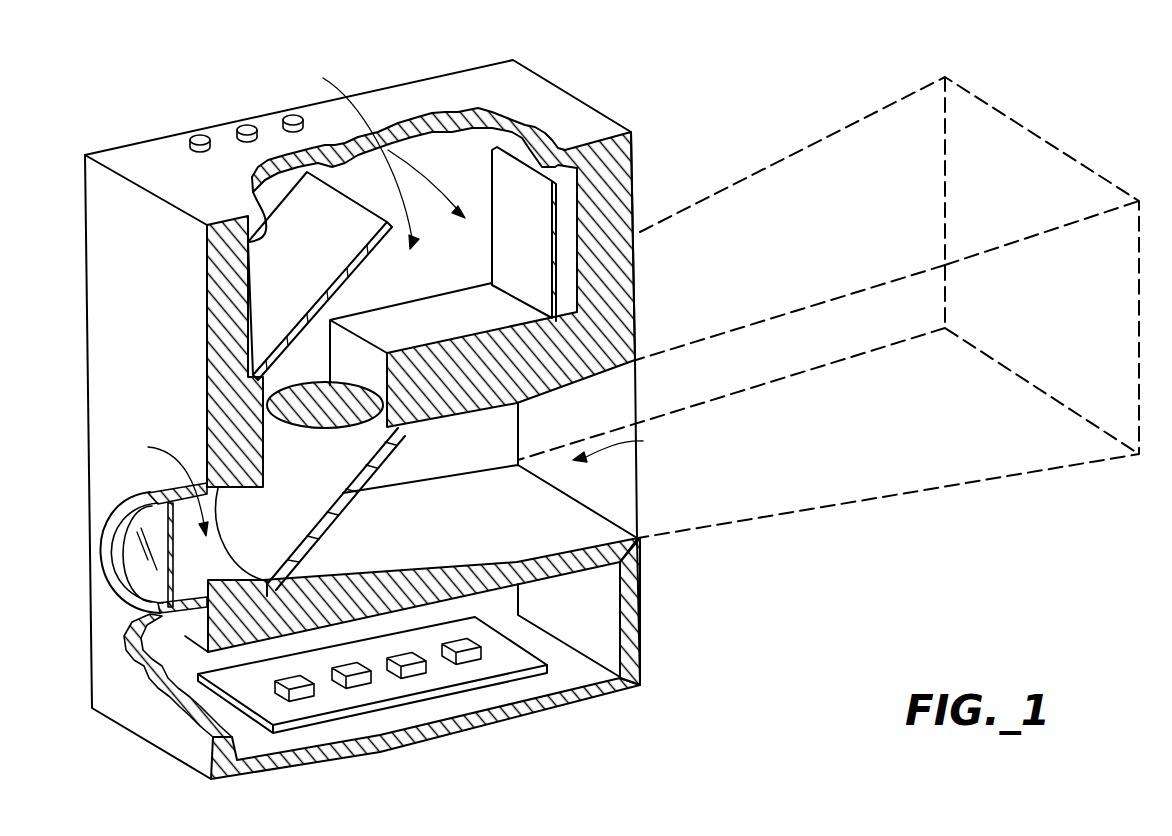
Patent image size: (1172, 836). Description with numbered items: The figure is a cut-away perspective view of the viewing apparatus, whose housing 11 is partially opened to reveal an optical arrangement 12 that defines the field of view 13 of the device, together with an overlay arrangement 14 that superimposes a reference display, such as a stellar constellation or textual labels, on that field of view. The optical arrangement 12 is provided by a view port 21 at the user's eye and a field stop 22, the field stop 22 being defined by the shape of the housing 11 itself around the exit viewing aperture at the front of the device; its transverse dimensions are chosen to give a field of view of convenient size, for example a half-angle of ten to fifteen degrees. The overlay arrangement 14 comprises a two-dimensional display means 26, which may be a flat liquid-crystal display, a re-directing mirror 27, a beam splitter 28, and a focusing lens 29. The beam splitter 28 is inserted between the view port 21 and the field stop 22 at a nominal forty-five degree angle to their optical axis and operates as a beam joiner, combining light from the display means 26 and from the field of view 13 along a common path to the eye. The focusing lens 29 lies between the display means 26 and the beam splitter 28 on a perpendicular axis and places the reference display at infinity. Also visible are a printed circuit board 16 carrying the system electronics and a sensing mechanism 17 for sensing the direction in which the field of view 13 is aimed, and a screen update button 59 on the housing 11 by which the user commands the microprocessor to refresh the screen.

The housing 11 is at (427, 76).
The optical arrangement 12 is at (393, 505).
The field of view 13 is at (1037, 314).
The overlay arrangement 14 is at (374, 155).
The printed circuit board 16 is at (518, 680).
The sensing mechanism 17 is at (300, 697).
The view port 21 is at (105, 570).
The field stop 22 is at (596, 510).
The display means 26 is at (497, 187).
The re-directing mirror 27 is at (352, 258).
The beam splitter 28 is at (318, 528).
The focusing lens 29 is at (330, 420).
The screen update button 59 is at (200, 135).